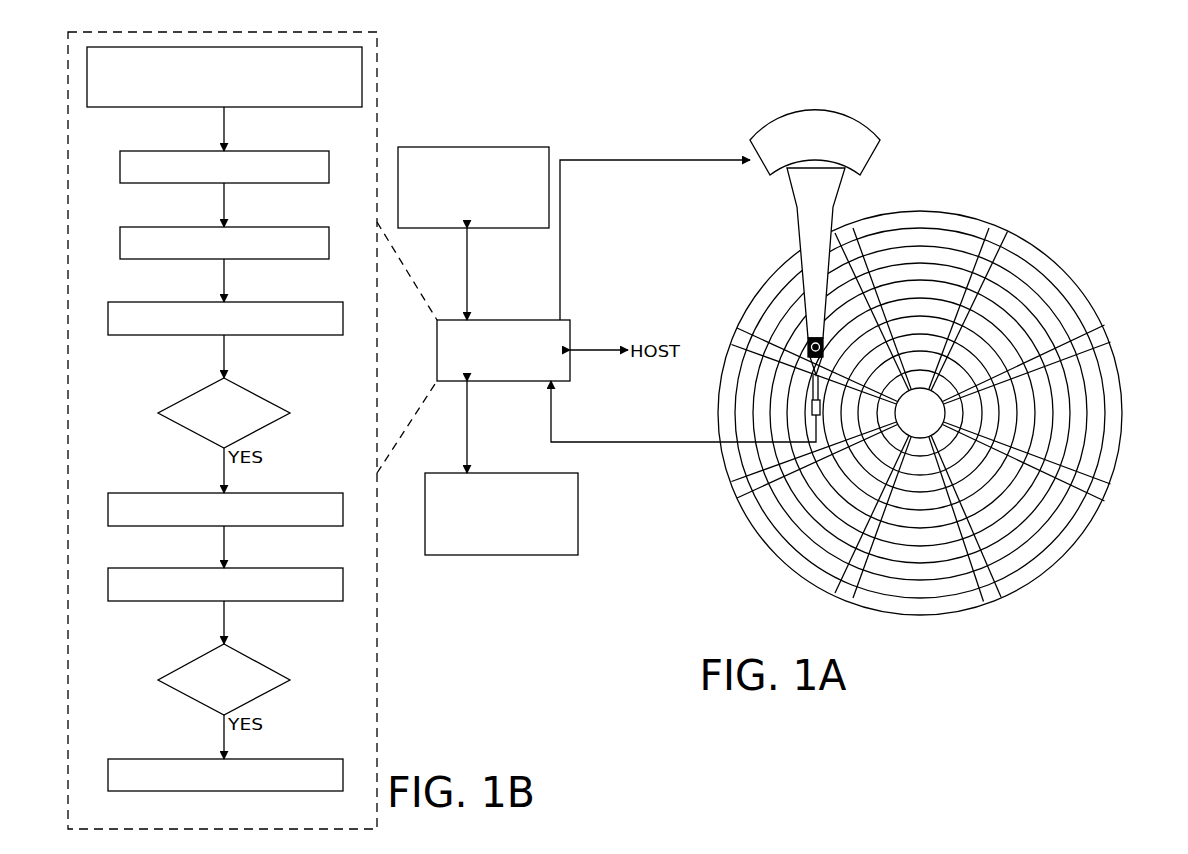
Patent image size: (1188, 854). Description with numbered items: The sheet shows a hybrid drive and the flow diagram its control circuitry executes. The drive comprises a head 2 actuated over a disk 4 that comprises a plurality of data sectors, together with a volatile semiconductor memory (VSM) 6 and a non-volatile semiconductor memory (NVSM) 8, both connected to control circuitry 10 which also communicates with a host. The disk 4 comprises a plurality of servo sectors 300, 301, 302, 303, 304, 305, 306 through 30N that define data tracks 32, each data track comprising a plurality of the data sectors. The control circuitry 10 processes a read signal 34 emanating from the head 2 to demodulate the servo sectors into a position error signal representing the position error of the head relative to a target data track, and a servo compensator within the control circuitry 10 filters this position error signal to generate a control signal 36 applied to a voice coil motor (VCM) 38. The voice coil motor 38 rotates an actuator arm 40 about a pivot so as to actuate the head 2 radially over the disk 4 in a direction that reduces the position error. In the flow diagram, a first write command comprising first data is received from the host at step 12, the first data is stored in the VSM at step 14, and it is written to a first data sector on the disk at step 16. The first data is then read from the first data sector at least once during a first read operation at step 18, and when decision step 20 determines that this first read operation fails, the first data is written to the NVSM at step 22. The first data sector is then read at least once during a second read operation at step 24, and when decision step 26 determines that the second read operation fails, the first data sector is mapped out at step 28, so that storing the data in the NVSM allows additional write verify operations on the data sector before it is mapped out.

In FIG. 1A, the head 2 is at (810, 412).
In FIG. 1A, the disk 4 is at (923, 409).
In FIG. 1A, the volatile semiconductor memory (VSM) 6 is at (472, 147).
In FIG. 1A, the non-volatile semiconductor memory (NVSM) 8 is at (578, 514).
In FIG. 1A, the control circuitry 10 is at (513, 381).
In FIG. 1B, the receive write command step 12 is at (327, 107).
In FIG. 1B, the store data in VSM step 14 is at (310, 183).
In FIG. 1B, the write data to disk step 16 is at (310, 259).
In FIG. 1B, the first read operation step 18 is at (318, 335).
In FIG. 1B, the first read failure decision step 20 is at (273, 423).
In FIG. 1B, the write data to NVSM step 22 is at (320, 526).
In FIG. 1B, the second read operation step 24 is at (316, 601).
In FIG. 1B, the second read failure decision step 26 is at (272, 692).
In FIG. 1B, the map out data sector step 28 is at (320, 791).
In FIG. 1A, the servo sector 300 is at (1000, 232).
In FIG. 1A, the servo sector 301 is at (1100, 340).
In FIG. 1A, the servo sector 302 is at (1102, 492).
In FIG. 1A, the servo sector 303 is at (990, 598).
In FIG. 1A, the servo sector 304 is at (842, 598).
In FIG. 1A, the servo sector 305 is at (740, 488).
In FIG. 1A, the servo sector 306 is at (740, 322).
In FIG. 1A, the servo sector 30N is at (850, 232).
In FIG. 1A, the data track 32 is at (918, 240).
In FIG. 1A, the read signal 34 is at (625, 442).
In FIG. 1A, the control signal 36 is at (560, 265).
In FIG. 1A, the voice coil motor (VCM) 38 is at (767, 168).
In FIG. 1A, the actuator arm 40 is at (801, 240).